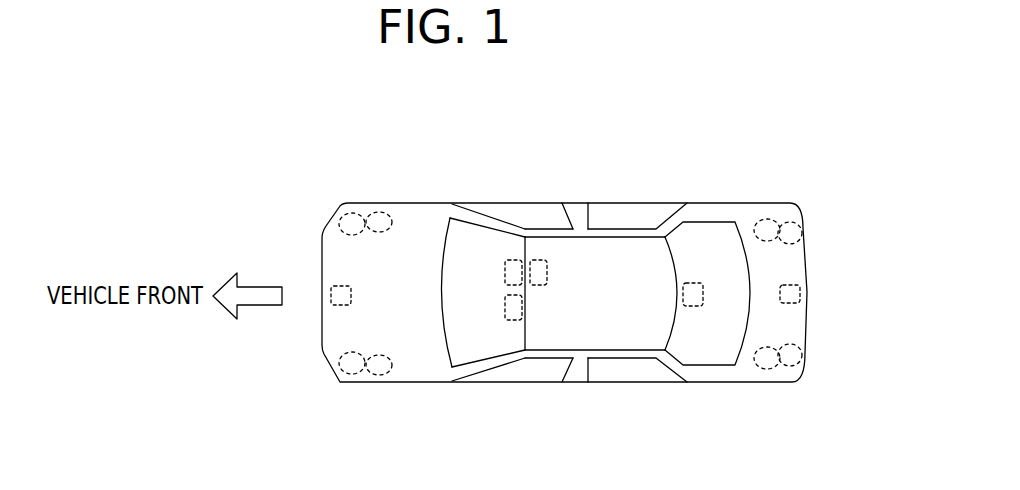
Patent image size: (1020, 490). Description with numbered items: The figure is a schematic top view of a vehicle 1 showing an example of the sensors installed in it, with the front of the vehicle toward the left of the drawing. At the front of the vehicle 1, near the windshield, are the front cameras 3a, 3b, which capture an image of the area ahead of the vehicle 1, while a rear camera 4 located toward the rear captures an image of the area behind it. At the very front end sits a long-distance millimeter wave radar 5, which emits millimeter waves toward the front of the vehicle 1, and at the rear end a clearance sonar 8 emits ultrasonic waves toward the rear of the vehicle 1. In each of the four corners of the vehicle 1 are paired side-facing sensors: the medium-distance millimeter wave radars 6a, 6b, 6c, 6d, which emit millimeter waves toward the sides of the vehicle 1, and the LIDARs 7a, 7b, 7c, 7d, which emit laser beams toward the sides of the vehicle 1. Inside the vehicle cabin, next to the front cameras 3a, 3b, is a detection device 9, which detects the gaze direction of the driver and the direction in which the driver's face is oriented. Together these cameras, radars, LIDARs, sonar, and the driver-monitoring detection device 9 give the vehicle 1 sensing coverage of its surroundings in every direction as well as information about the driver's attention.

The vehicle 1 is at (621, 202).
The front camera 3a is at (505, 272).
The front camera 3b is at (505, 310).
The rear camera 4 is at (690, 307).
The long-distance millimeter wave radar 5 is at (338, 307).
The medium-distance millimeter wave radar 6a is at (396, 212).
The medium-distance millimeter wave radar 6b is at (395, 380).
The medium-distance millimeter wave radar 6c is at (810, 222).
The medium-distance millimeter wave radar 6d is at (805, 353).
The LIDAR 7a is at (330, 214).
The LIDAR 7b is at (335, 364).
The LIDAR 7c is at (755, 212).
The LIDAR 7d is at (753, 372).
The clearance sonar 8 is at (808, 292).
The detection device 9 is at (547, 270).